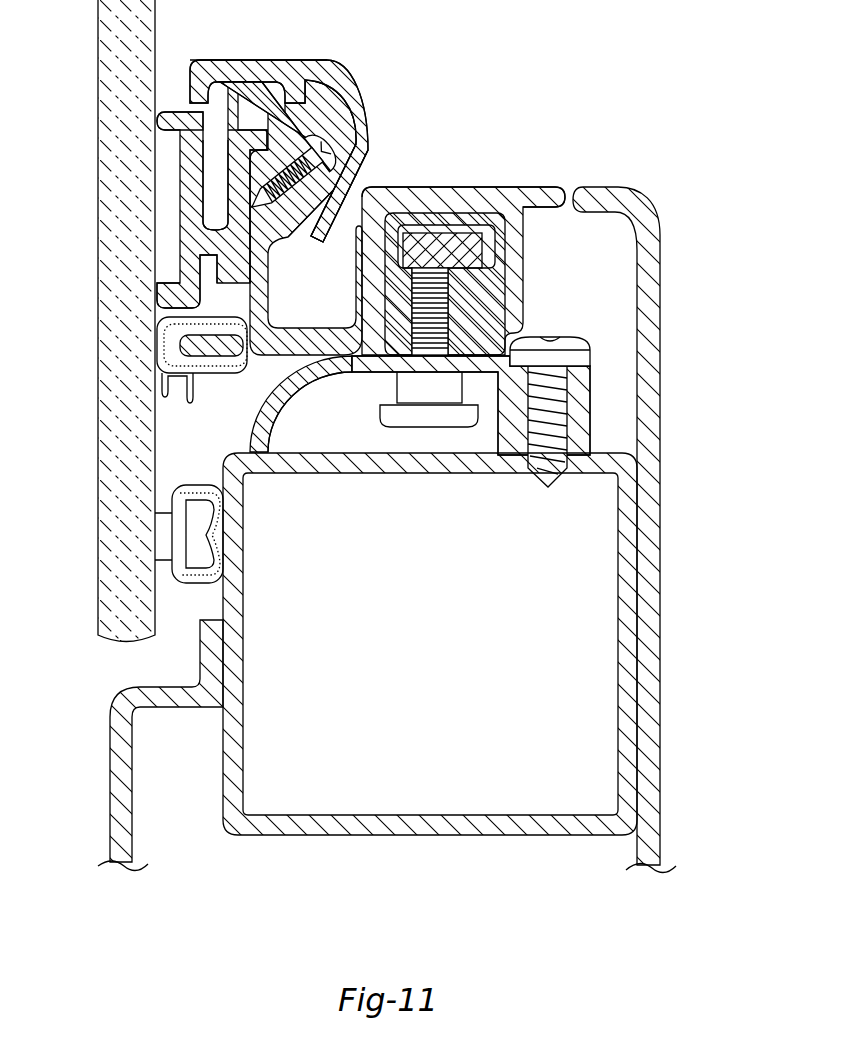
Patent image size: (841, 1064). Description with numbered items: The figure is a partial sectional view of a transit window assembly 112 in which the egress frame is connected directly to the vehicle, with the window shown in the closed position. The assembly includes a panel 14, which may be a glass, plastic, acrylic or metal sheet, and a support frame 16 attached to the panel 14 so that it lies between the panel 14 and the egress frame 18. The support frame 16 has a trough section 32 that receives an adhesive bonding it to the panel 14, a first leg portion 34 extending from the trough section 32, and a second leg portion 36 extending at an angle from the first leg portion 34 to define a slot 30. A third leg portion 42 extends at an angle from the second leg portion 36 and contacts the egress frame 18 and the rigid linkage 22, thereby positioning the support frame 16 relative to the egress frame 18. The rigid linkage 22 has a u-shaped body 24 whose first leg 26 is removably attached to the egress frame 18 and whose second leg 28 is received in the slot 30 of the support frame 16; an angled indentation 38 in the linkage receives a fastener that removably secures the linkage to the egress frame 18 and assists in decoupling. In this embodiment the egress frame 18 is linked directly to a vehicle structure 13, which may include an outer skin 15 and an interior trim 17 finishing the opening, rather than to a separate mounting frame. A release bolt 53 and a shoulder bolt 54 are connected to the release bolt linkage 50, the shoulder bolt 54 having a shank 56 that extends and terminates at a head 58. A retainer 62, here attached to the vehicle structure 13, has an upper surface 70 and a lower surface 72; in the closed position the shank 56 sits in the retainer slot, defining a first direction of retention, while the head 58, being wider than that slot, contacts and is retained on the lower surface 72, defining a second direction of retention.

The vehicle structure 13 is at (465, 835).
The panel 14 is at (117, 70).
The outer skin 15 is at (133, 775).
The support frame 16 is at (174, 108).
The interior trim 17 is at (664, 550).
The egress frame 18 is at (443, 192).
The rigid linkage 22 is at (250, 98).
The u-shaped body 24 is at (262, 108).
The first leg 26 is at (288, 292).
The second leg 28 is at (210, 160).
The slot 30 is at (208, 217).
The trough section 32 is at (165, 150).
The first leg portion 34 is at (219, 255).
The second leg portion 36 is at (287, 248).
The indentation 38 is at (328, 160).
The third leg portion 42 is at (255, 135).
The release bolt linkage 50 is at (455, 260).
The release bolt 53 is at (497, 282).
The shoulder bolt 54 is at (395, 392).
The shank 56 is at (448, 383).
The head 58 is at (430, 418).
The retainer 62 is at (293, 393).
The upper surface 70 is at (283, 378).
The lower surface 72 is at (283, 408).
The transit window assembly 112 is at (376, 76).